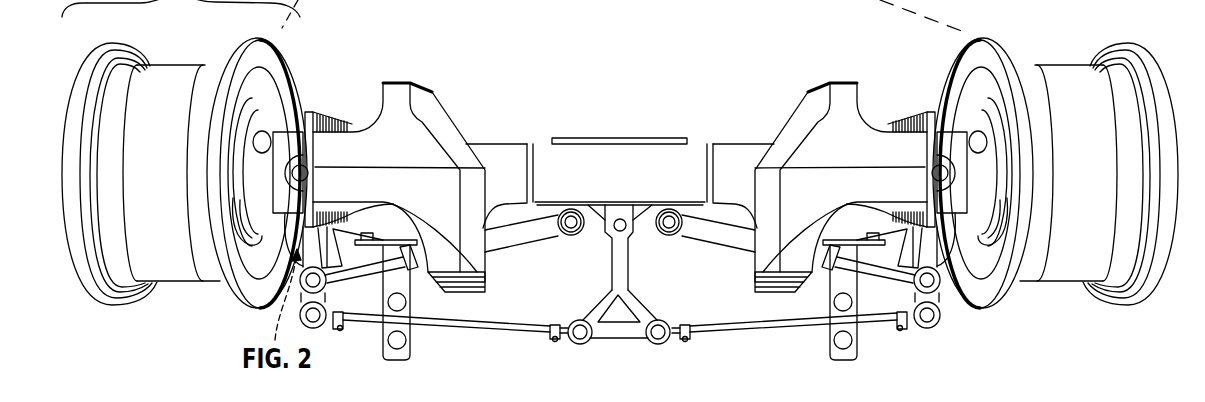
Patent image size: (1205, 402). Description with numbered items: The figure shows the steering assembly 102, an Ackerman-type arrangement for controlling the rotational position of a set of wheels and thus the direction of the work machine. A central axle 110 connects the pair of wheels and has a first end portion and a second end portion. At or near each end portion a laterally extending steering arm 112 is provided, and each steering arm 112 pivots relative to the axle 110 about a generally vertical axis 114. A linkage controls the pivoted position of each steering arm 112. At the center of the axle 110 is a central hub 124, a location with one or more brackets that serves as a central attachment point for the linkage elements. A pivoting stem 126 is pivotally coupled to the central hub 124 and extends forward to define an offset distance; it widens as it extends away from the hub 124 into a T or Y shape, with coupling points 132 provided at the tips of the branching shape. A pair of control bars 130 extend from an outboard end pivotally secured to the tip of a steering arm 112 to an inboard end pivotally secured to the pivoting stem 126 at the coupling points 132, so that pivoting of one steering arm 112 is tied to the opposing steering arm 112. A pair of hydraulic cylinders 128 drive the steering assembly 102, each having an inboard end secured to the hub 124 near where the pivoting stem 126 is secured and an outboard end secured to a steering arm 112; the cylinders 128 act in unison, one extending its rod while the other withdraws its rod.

The steering assembly 102 is at (634, 68).
The central axle 110 is at (498, 160).
The steering arm 112 is at (970, 303).
The vertical axis 114 is at (935, 174).
The central hub 124 is at (635, 172).
The pivoting stem 126 is at (617, 260).
The hydraulic cylinder 128 is at (537, 233).
The control bar 130 is at (440, 330).
The coupling point 132 is at (662, 343).